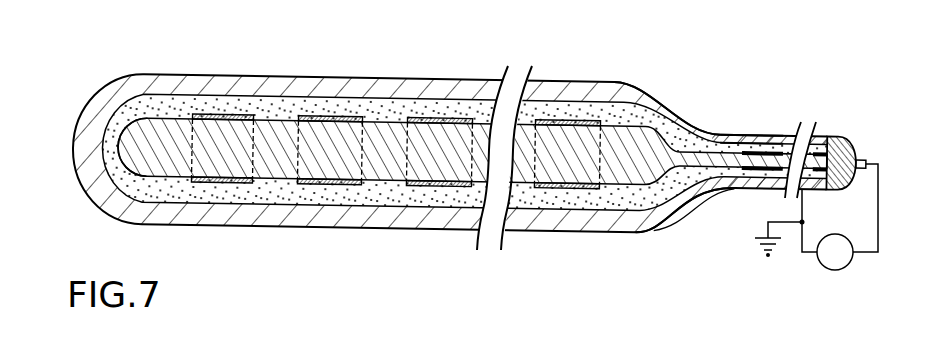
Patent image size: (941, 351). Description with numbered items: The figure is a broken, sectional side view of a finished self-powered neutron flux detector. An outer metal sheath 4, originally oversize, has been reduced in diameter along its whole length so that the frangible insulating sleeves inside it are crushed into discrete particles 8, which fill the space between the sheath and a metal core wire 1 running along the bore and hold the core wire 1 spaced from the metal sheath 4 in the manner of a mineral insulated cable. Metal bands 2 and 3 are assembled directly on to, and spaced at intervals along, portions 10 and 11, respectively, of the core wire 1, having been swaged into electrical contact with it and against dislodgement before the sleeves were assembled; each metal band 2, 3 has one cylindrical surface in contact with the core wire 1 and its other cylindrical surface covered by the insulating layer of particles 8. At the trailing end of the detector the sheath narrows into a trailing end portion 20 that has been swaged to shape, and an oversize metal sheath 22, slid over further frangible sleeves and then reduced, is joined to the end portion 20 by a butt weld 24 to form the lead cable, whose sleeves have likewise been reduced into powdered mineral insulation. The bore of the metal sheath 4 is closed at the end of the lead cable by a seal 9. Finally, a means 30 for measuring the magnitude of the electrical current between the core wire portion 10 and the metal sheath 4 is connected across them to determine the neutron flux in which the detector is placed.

The metal core wire 1 is at (377, 126).
The metal band 2 is at (300, 99).
The metal band 3 is at (738, 191).
The outer metal sheath 4 is at (435, 90).
The discrete particles 8 is at (463, 108).
The seal 9 is at (855, 148).
The core wire portion 10 is at (145, 130).
The core wire portion 11 is at (762, 189).
The trailing end portion 20 is at (686, 117).
The oversize metal sheath 22 is at (818, 137).
The butt weld 24 is at (724, 139).
The means for measuring electrical current 30 is at (755, 150).